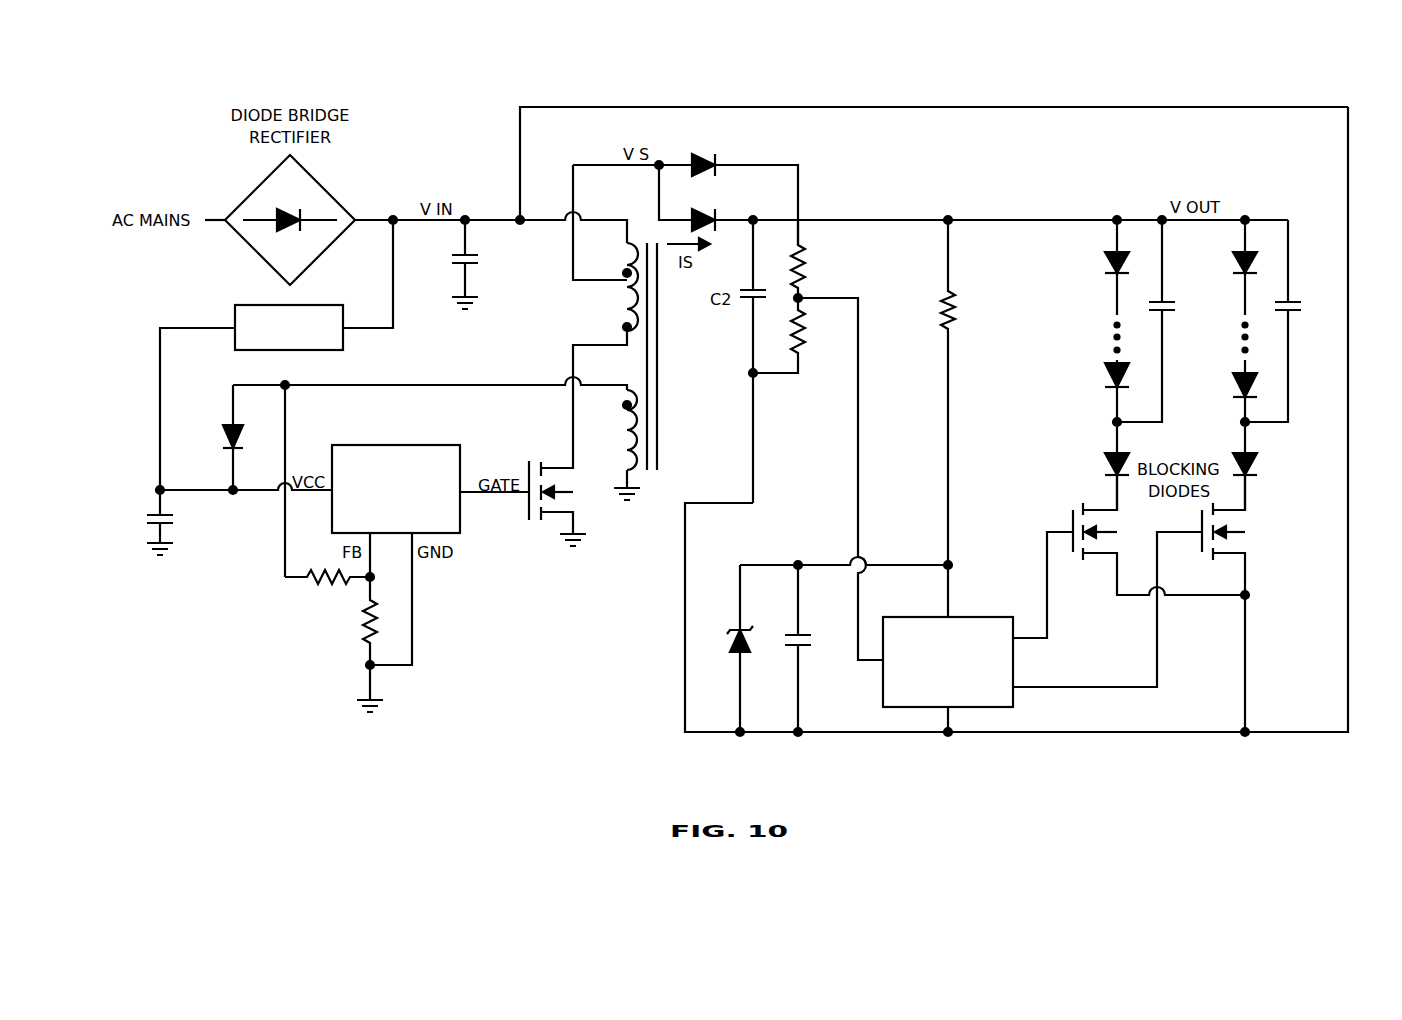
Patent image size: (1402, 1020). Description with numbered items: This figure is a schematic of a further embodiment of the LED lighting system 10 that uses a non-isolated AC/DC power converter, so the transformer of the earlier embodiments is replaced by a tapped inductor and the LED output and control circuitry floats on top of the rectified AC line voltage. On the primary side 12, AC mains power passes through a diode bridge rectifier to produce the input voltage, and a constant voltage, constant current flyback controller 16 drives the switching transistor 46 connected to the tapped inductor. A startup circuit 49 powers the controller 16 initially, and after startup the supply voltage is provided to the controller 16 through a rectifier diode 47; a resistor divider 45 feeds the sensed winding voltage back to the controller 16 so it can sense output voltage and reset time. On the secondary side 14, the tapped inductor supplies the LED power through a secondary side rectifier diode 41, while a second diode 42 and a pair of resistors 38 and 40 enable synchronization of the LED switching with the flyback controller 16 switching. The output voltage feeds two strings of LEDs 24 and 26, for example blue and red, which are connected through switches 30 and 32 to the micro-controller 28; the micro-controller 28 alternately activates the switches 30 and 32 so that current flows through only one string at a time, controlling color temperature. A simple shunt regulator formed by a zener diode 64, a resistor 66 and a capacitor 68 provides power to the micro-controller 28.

The LED lighting system 10 is at (822, 88).
The primary side 12 is at (413, 197).
The secondary side 14 is at (1066, 102).
The primary side flyback controller 16 is at (425, 445).
The string of LEDs 24 is at (1116, 208).
The string of LEDs 26 is at (1244, 208).
The micro-controller 28 is at (985, 617).
The switch 30 is at (1073, 517).
The switch 32 is at (1247, 540).
The resistor 38 is at (806, 255).
The resistor 40 is at (802, 350).
The secondary side rectifier diode 41 is at (718, 215).
The diode 42 is at (718, 158).
The resistor divider 45 is at (330, 583).
The switching transistor Q1 46 is at (529, 519).
The rectifier diode 47 is at (229, 427).
The startup circuit 49 is at (235, 308).
The zener diode 64 is at (736, 628).
The resistor 66 is at (945, 293).
The capacitor 68 is at (803, 635).